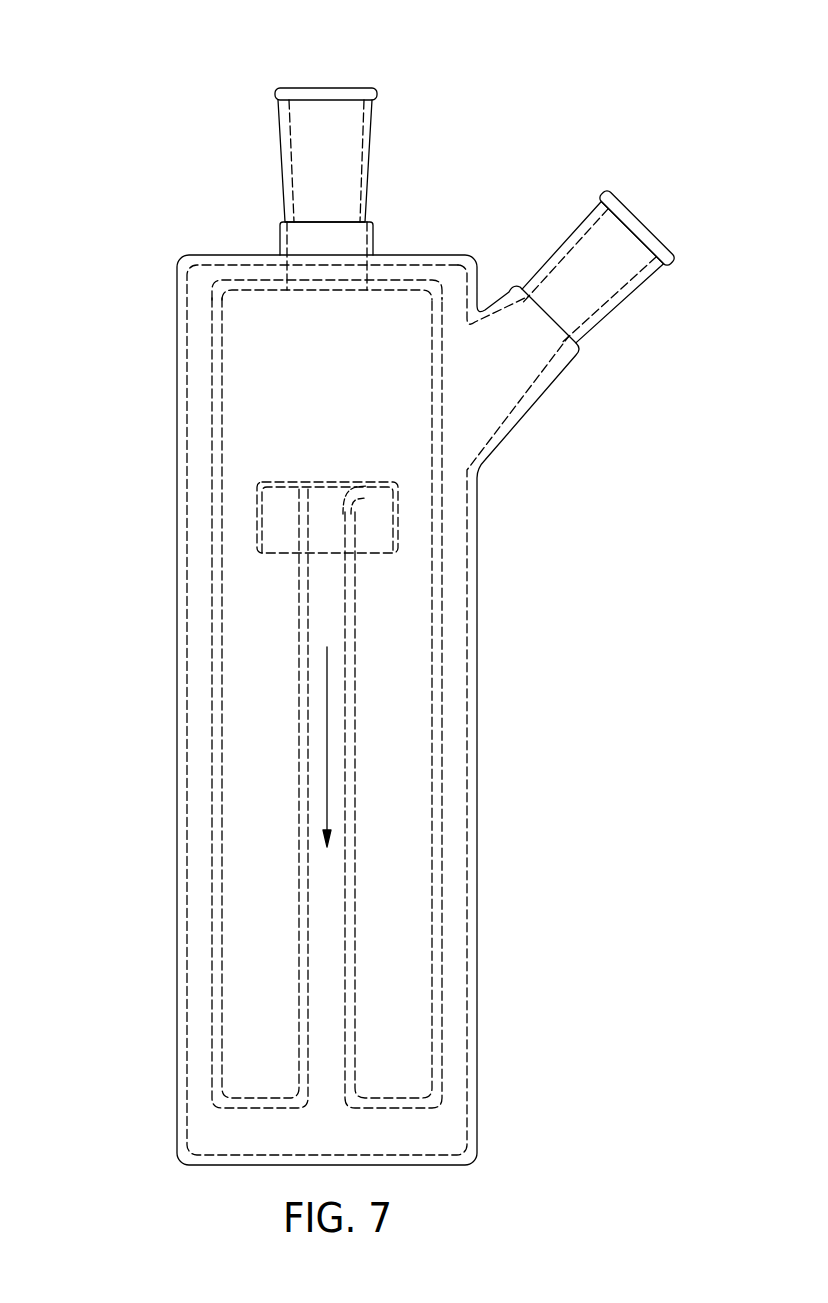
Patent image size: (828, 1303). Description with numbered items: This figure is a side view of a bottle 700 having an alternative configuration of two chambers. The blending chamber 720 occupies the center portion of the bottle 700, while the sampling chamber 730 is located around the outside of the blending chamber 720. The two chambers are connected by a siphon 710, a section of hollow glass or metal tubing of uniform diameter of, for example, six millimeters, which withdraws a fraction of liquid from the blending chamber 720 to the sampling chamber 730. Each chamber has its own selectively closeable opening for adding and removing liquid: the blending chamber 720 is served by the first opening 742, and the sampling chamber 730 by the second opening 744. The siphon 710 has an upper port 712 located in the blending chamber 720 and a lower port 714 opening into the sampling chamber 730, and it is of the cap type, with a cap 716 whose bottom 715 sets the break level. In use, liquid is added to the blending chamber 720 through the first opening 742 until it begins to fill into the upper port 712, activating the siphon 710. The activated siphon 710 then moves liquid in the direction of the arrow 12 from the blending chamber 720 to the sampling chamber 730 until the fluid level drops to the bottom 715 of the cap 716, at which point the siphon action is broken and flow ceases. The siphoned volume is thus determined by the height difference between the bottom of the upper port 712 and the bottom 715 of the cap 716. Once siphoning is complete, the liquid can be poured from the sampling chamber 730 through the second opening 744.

The bottle 700 is at (138, 111).
The first opening 742 is at (330, 87).
The second opening 744 is at (641, 221).
The blending chamber 720 is at (422, 713).
The sampling chamber 730 is at (452, 800).
The cap 716 is at (283, 481).
The bottom of the cap 715 is at (276, 555).
The upper port 712 is at (360, 493).
The siphon 710 is at (333, 625).
The lower port 714 is at (326, 1105).
The arrow 12 is at (327, 742).